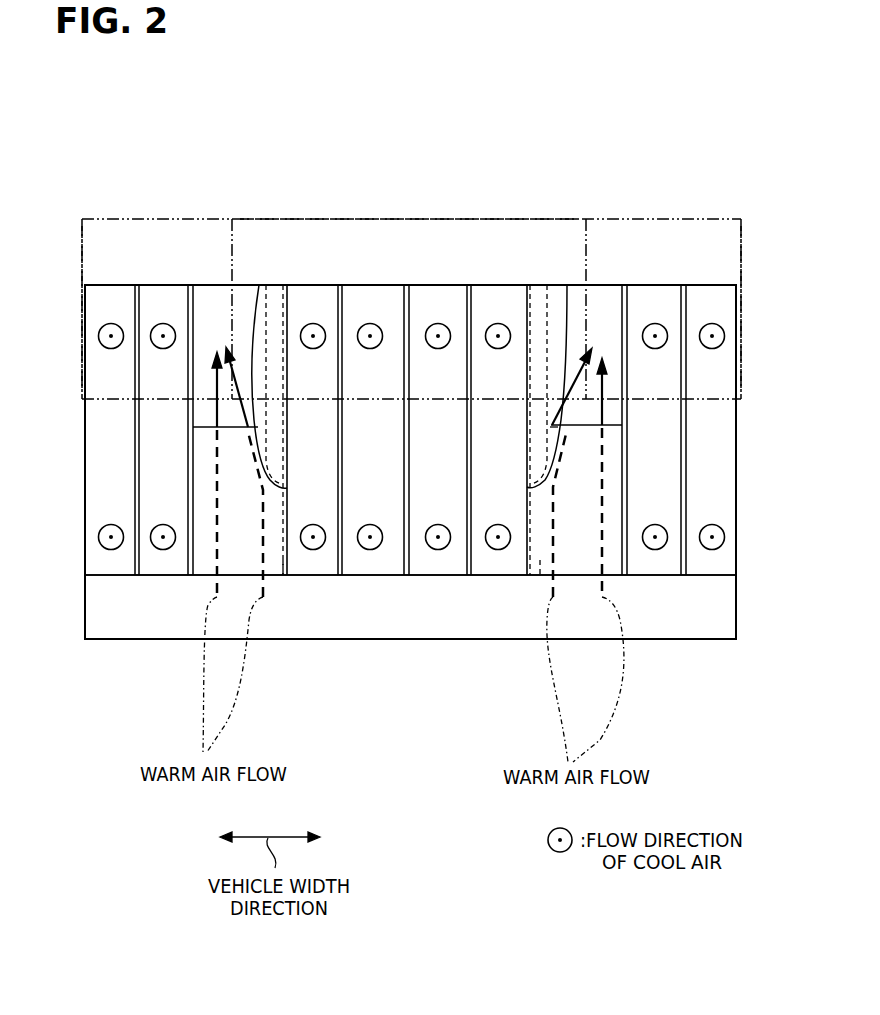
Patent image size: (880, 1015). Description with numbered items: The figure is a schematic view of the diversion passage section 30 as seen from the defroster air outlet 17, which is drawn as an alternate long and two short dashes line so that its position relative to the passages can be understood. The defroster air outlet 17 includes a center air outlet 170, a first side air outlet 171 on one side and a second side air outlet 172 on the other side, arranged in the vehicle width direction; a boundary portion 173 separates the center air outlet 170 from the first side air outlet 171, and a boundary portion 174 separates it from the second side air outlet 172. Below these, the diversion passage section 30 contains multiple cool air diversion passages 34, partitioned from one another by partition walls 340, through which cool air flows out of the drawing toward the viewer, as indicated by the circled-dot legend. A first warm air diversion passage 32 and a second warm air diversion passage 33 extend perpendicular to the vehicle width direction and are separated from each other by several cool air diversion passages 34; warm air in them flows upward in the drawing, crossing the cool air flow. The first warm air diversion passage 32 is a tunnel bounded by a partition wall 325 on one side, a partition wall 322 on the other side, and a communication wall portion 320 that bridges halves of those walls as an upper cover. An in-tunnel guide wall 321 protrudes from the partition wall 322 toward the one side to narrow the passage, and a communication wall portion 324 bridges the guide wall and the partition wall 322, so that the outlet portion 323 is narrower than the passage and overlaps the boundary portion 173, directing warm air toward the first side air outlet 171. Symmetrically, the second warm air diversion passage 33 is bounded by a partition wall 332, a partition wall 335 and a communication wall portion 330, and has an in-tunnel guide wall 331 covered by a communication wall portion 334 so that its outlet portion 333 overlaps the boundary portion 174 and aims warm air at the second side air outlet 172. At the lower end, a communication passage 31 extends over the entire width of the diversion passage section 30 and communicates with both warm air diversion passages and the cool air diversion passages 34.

The defroster air outlet 17 is at (722, 221).
The center air outlet 170 is at (438, 230).
The first side air outlet 171 is at (147, 228).
The second side air outlet 172 is at (672, 230).
The boundary portion 173 is at (232, 257).
The boundary portion 174 is at (588, 255).
The diversion passage section 30 is at (740, 427).
The communication passage 31 is at (680, 625).
The first warm air diversion passage 32 is at (231, 562).
The communication wall portion 320 is at (200, 560).
The in-tunnel guide wall 321 is at (283, 562).
The partition wall 322 is at (287, 553).
The outlet portion 323 is at (259, 285).
The communication wall portion 324 is at (272, 293).
The partition wall 325 is at (190, 373).
The second warm air diversion passage 33 is at (590, 560).
The communication wall portion 330 is at (562, 560).
The in-tunnel guide wall 331 is at (540, 562).
The partition wall 332 is at (527, 540).
The outlet portion 333 is at (567, 285).
The communication wall portion 334 is at (545, 293).
The partition wall 335 is at (627, 302).
The cool air diversion passage 34 is at (103, 458).
The partition wall 340 is at (344, 292).